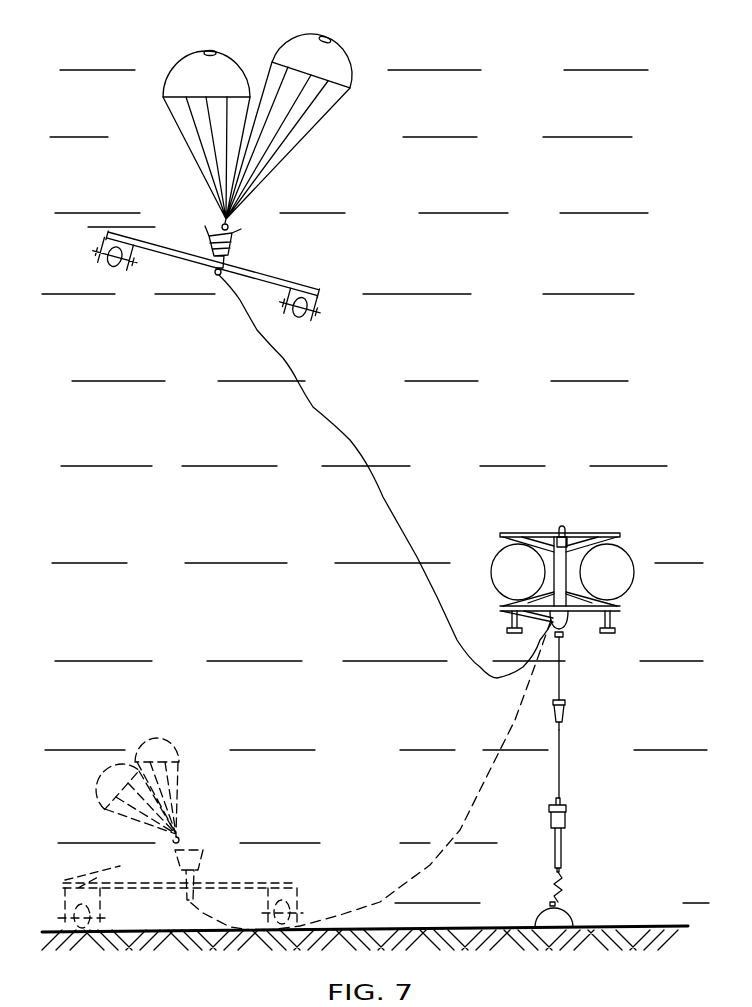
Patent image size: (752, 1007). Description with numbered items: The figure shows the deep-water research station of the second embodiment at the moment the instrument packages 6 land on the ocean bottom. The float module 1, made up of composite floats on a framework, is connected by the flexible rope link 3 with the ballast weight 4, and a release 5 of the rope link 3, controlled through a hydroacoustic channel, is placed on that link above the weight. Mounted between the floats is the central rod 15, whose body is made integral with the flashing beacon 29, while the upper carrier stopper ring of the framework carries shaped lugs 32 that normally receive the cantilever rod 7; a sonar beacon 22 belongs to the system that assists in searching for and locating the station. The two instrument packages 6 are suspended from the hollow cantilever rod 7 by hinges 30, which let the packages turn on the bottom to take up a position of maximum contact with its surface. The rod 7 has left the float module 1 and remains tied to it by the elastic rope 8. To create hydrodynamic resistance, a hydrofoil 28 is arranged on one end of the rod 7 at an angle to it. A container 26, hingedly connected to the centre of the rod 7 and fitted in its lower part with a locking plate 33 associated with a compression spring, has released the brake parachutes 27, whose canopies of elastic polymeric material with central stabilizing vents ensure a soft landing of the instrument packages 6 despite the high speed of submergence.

The float module 1 is at (621, 560).
The flexible rope link 3 is at (560, 674).
The ballast weight 4 is at (561, 919).
The release 5 is at (566, 818).
The instrument packages 6 is at (118, 262).
The cantilever rod 7 is at (271, 278).
The elastic rope 8 is at (352, 441).
The central rod 15 is at (562, 560).
The sonar beacon 22 is at (566, 714).
The container 26 is at (231, 245).
The brake parachutes 27 is at (285, 58).
The hydrofoil 28 is at (128, 231).
The flashing beacon 29 is at (562, 526).
The hinges 30 is at (316, 309).
The shaped lugs 32 is at (510, 531).
The locking plate 33 is at (267, 181).